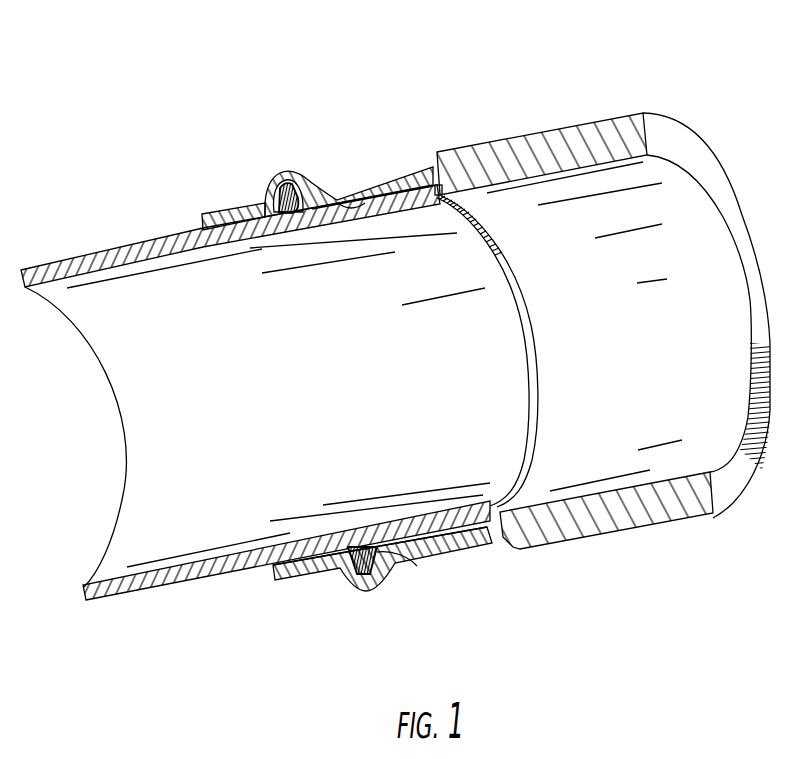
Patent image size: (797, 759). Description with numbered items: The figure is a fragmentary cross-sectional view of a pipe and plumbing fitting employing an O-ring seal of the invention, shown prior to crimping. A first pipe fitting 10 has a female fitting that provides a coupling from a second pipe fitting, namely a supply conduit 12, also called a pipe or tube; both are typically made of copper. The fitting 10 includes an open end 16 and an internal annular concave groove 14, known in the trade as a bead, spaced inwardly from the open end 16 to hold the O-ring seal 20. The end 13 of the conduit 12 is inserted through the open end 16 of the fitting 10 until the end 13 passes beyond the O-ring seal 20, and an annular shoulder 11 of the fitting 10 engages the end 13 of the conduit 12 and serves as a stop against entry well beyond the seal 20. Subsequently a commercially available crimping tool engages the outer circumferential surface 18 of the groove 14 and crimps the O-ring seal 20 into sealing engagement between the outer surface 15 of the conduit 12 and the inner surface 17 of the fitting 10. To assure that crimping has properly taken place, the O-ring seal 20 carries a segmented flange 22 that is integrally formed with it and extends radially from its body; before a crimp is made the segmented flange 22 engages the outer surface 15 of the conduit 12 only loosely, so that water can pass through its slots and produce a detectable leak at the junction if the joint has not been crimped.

The first pipe fitting 10 is at (648, 99).
The annular shoulder 11 is at (438, 198).
The supply conduit 12 is at (102, 254).
The end of conduit 13 is at (533, 303).
The internal annular concave groove 14 is at (366, 591).
The outer surface of conduit 15 is at (149, 244).
The open end 16 is at (203, 226).
The inner surface of fitting 17 is at (366, 185).
The outer circumferential surface of groove 18 is at (338, 177).
The O-ring seal 20 is at (292, 193).
The segmented flange 22 is at (306, 209).